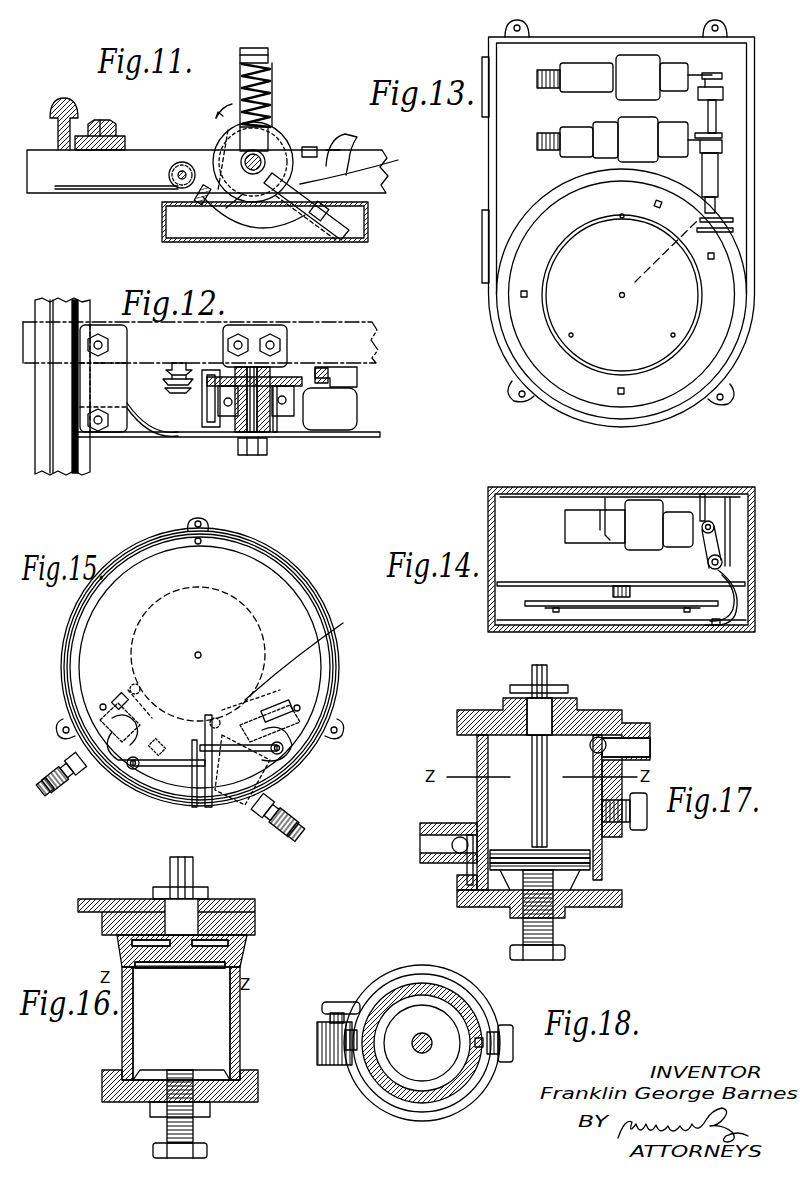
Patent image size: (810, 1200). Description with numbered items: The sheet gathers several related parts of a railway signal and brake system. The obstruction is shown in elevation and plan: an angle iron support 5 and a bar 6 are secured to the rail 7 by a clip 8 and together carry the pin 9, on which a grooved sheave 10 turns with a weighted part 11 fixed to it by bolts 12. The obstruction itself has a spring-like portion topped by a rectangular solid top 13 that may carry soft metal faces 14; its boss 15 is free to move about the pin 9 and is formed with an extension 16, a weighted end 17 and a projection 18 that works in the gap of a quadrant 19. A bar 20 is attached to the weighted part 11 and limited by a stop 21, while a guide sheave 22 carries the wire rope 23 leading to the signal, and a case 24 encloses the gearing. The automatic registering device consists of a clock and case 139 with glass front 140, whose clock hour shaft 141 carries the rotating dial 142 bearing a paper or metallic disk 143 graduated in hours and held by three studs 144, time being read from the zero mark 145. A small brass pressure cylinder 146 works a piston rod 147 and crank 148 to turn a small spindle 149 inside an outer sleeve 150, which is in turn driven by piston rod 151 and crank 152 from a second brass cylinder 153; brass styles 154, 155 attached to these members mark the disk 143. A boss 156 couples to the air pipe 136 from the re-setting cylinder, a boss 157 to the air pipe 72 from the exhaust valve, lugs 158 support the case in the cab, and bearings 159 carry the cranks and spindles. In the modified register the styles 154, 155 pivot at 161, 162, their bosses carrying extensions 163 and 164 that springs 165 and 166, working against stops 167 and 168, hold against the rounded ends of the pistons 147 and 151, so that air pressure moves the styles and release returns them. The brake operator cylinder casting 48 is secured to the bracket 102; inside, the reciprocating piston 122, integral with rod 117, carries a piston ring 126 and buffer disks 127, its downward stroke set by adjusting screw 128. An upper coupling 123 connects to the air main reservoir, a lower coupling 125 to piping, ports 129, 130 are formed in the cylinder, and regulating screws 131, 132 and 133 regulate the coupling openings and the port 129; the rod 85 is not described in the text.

In FIG. 11, the angle iron support 5 is at (38, 180).
In FIG. 12, the angle iron support 5 is at (322, 340).
In FIG. 12, the bar 6 is at (142, 438).
In FIG. 11, the rail 7 is at (60, 100).
In FIG. 12, the rail 7 is at (80, 463).
In FIG. 11, the clip 8 is at (116, 133).
In FIG. 12, the clip 8 is at (115, 395).
In FIG. 11, the pin 9 is at (243, 155).
In FIG. 12, the pin 9 is at (251, 455).
In FIG. 11, the grooved sheave 10 is at (256, 158).
In FIG. 12, the grooved sheave 10 is at (285, 380).
In FIG. 11, the weighted part 11 is at (264, 222).
In FIG. 12, the weighted part 11 is at (283, 420).
In FIG. 11, the bolts 12 is at (212, 160).
In FIG. 12, the bolts 12 is at (228, 416).
In FIG. 11, the rectangular solid top 13 is at (274, 56).
In FIG. 11, the soft metal faces 14 is at (255, 48).
In FIG. 11, the boss 15 is at (262, 158).
In FIG. 12, the boss 15 is at (263, 440).
In FIG. 11, the extension 16 is at (358, 167).
In FIG. 12, the extension 16 is at (300, 425).
In FIG. 11, the weighted end 17 is at (342, 228).
In FIG. 12, the weighted end 17 is at (340, 428).
In FIG. 11, the projection 18 is at (320, 219).
In FIG. 12, the projection 18 is at (330, 388).
In FIG. 11, the quadrant 19 is at (349, 155).
In FIG. 12, the quadrant 19 is at (345, 376).
In FIG. 11, the bar 20 is at (212, 200).
In FIG. 12, the bar 20 is at (210, 427).
In FIG. 11, the stop 21 is at (312, 147).
In FIG. 11, the guide sheave 22 is at (172, 183).
In FIG. 12, the guide sheave 22 is at (178, 393).
In FIG. 11, the wire rope 23 is at (78, 192).
In FIG. 11, the case 24 is at (368, 218).
In FIG. 16, the operator cylinder casting 48 is at (181, 1023).
In FIG. 17, the operator cylinder casting 48 is at (477, 760).
In FIG. 18, the operator cylinder casting 48 is at (452, 993).
In FIG. 13, the air pipe 72 is at (537, 141).
In FIG. 15, the air pipe 72 is at (56, 786).
In FIG. 14, the rod 85 is at (703, 494).
In FIG. 16, the bracket 102 is at (98, 899).
In FIG. 16, the rod 117 is at (193, 873).
In FIG. 17, the rod 117 is at (547, 675).
In FIG. 18, the rod 117 is at (412, 1050).
In FIG. 16, the reciprocating piston 122 is at (240, 967).
In FIG. 17, the reciprocating piston 122 is at (622, 896).
In FIG. 17, the coupling 123 is at (650, 740).
In FIG. 12, the coupling 125 is at (330, 370).
In FIG. 17, the coupling 125 is at (420, 848).
In FIG. 18, the coupling 125 is at (320, 1058).
In FIG. 16, the piston ring 126 is at (233, 954).
In FIG. 17, the piston ring 126 is at (600, 866).
In FIG. 16, the rubber or leather disks 127 is at (256, 922).
In FIG. 17, the rubber or leather disks 127 is at (523, 850).
In FIG. 18, the rubber or leather disks 127 is at (428, 1064).
In FIG. 16, the adjusting screw 128 is at (193, 1128).
In FIG. 17, the adjusting screw 128 is at (553, 930).
In FIG. 17, the port 129 is at (595, 858).
In FIG. 18, the port 129 is at (483, 1050).
In FIG. 17, the port 130 is at (465, 880).
In FIG. 18, the port 130 is at (352, 1050).
In FIG. 17, the regulating screw 131 is at (617, 712).
In FIG. 17, the regulating screw 132 is at (440, 863).
In FIG. 18, the regulating screw 132 is at (338, 1002).
In FIG. 17, the regulating screw 133 is at (640, 822).
In FIG. 18, the regulating screw 133 is at (512, 1058).
In FIG. 13, the air pipe 136 is at (534, 84).
In FIG. 15, the air pipe 136 is at (290, 830).
In FIG. 13, the clock and case 139 is at (752, 195).
In FIG. 14, the clock and case 139 is at (752, 532).
In FIG. 15, the clock and case 139 is at (128, 546).
In FIG. 13, the glass front 140 is at (565, 133).
In FIG. 14, the glass front 140 is at (640, 630).
In FIG. 13, the clock hour shaft 141 is at (622, 298).
In FIG. 14, the clock hour shaft 141 is at (615, 583).
In FIG. 15, the clock hour shaft 141 is at (200, 652).
In FIG. 13, the rotating dial 142 is at (532, 258).
In FIG. 14, the rotating dial 142 is at (525, 607).
In FIG. 15, the rotating dial 142 is at (304, 598).
In FIG. 13, the paper or metallic sheet disk 143 is at (577, 340).
In FIG. 14, the paper or metallic sheet disk 143 is at (580, 607).
In FIG. 15, the paper or metallic sheet disk 143 is at (278, 586).
In FIG. 13, the studs 144 is at (556, 332).
In FIG. 14, the studs 144 is at (687, 613).
In FIG. 15, the studs 144 is at (194, 537).
In FIG. 13, the zero mark 145 is at (700, 228).
In FIG. 13, the air pressure cylinder 146 is at (638, 77).
In FIG. 14, the air pressure cylinder 146 is at (645, 512).
In FIG. 15, the air pressure cylinder 146 is at (235, 788).
In FIG. 13, the piston rod 147 is at (688, 66).
In FIG. 14, the piston rod 147 is at (679, 529).
In FIG. 15, the piston rod 147 is at (278, 714).
In FIG. 13, the crank 148 is at (722, 76).
In FIG. 14, the crank 148 is at (712, 521).
In FIG. 13, the small spindle 149 is at (716, 115).
In FIG. 14, the small spindle 149 is at (722, 562).
In FIG. 13, the outer sleeve 150 is at (718, 168).
In FIG. 13, the piston rod 151 is at (674, 139).
In FIG. 15, the piston rod 151 is at (112, 720).
In FIG. 13, the crank 152 is at (722, 137).
In FIG. 13, the brass pressure cylinder 153 is at (638, 139).
In FIG. 15, the brass pressure cylinder 153 is at (117, 755).
In FIG. 13, the brass style 154 is at (733, 220).
In FIG. 14, the brass style 154 is at (738, 593).
In FIG. 15, the brass style 154 is at (210, 770).
In FIG. 13, the brass style 155 is at (733, 231).
In FIG. 14, the brass style 155 is at (717, 625).
In FIG. 15, the brass style 155 is at (178, 768).
In FIG. 13, the boss 156 is at (586, 77).
In FIG. 15, the boss 156 is at (282, 808).
In FIG. 13, the boss 157 is at (576, 142).
In FIG. 15, the boss 157 is at (66, 768).
In FIG. 13, the lugs 158 is at (505, 33).
In FIG. 15, the lugs 158 is at (210, 522).
In FIG. 13, the bearings 159 is at (723, 93).
In FIG. 14, the bearings 159 is at (727, 535).
In FIG. 15, the pivot 161 is at (283, 750).
In FIG. 15, the pivot 162 is at (135, 770).
In FIG. 15, the extension 163 is at (282, 726).
In FIG. 15, the extension 164 is at (123, 702).
In FIG. 15, the spring 165 is at (225, 722).
In FIG. 15, the spring 166 is at (128, 692).
In FIG. 15, the stop 167 is at (235, 710).
In FIG. 15, the stop 168 is at (132, 686).